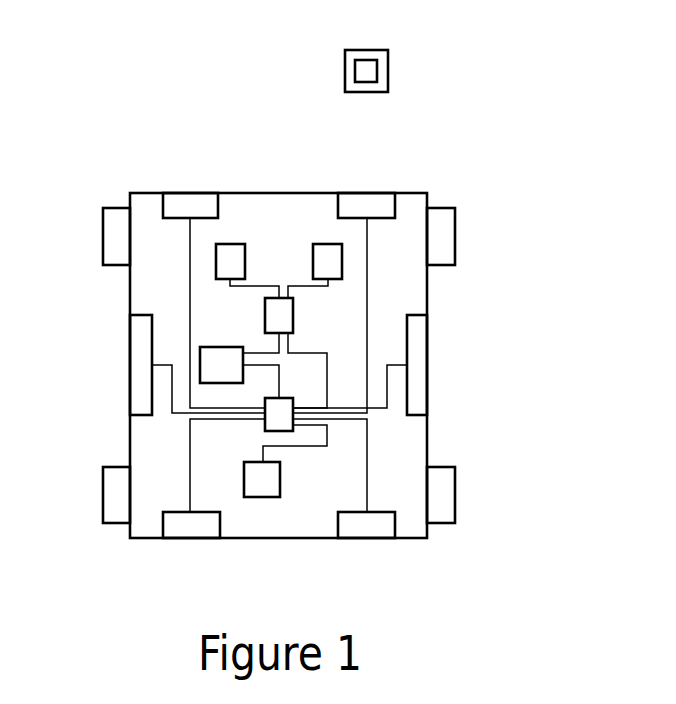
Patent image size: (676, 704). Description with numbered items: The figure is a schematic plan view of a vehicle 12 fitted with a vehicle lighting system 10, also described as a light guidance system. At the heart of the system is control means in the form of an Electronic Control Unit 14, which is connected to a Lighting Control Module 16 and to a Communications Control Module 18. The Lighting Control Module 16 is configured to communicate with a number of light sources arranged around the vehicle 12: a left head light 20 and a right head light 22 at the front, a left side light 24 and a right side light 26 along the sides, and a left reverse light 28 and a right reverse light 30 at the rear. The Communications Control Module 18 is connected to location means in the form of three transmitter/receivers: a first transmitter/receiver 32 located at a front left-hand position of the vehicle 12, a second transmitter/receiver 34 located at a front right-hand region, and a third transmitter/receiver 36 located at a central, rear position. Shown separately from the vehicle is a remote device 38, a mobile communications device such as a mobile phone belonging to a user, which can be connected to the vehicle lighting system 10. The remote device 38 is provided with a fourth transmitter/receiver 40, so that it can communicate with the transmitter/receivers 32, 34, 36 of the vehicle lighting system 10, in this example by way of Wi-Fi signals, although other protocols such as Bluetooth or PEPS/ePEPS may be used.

The vehicle lighting system 10 is at (474, 324).
The vehicle 12 is at (422, 50).
The Electronic Control Unit (ECU) 14 is at (220, 363).
The Lighting Control Module (LCM) 16 is at (280, 417).
The Communications Control Module (CCM) 18 is at (285, 313).
The left head light 20 is at (192, 207).
The right head light 22 is at (357, 205).
The left side light 24 is at (140, 390).
The right side light 26 is at (417, 390).
The left reverse light 28 is at (192, 525).
The right reverse light 30 is at (365, 525).
The first transmitter/receiver 32 is at (230, 258).
The second transmitter/receiver 34 is at (323, 258).
The third transmitter/receiver 36 is at (263, 480).
The remote device 38 is at (357, 52).
The fourth transmitter/receiver 40 is at (372, 70).